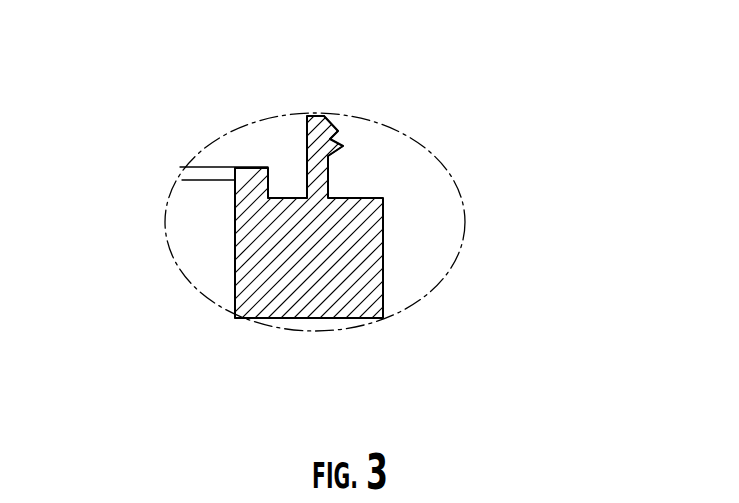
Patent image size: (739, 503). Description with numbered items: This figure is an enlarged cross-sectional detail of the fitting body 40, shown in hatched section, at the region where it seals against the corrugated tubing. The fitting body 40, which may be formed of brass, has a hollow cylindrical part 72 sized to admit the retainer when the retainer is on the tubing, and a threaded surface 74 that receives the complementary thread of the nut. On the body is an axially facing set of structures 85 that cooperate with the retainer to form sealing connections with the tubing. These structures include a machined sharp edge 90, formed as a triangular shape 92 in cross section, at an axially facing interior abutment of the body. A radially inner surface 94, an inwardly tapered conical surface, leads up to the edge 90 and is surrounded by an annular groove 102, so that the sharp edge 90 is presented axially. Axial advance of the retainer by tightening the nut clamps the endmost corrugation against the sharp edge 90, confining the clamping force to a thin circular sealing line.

The fitting body 40 is at (333, 320).
The hollow cylindrical part 72 is at (190, 217).
The threaded surface 74 is at (342, 128).
The axially facing set of structures 85 is at (265, 104).
The sharp edge 90 is at (262, 206).
The triangular shape 92 is at (256, 296).
The radially inner surface 94 is at (243, 167).
The annular groove 102 is at (305, 194).